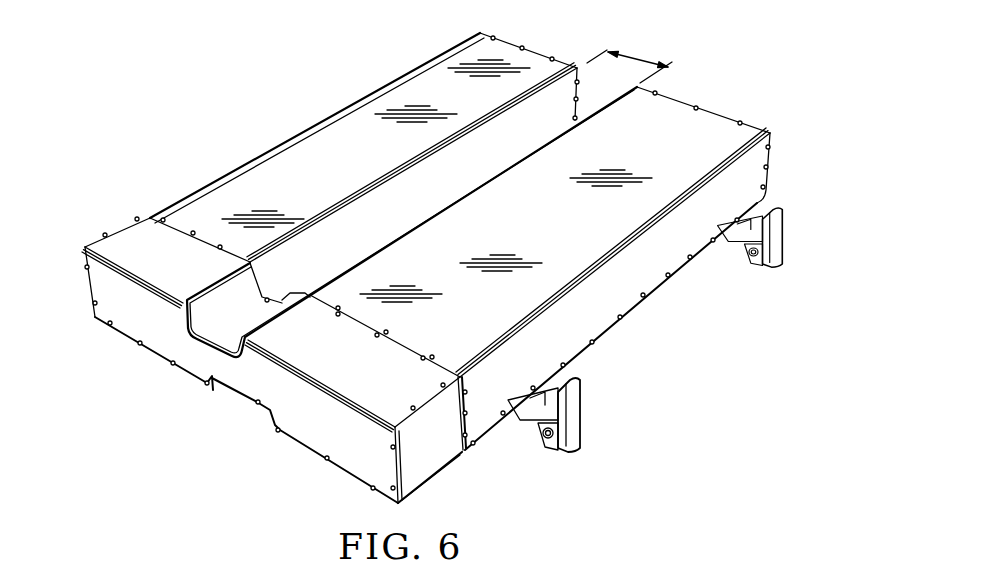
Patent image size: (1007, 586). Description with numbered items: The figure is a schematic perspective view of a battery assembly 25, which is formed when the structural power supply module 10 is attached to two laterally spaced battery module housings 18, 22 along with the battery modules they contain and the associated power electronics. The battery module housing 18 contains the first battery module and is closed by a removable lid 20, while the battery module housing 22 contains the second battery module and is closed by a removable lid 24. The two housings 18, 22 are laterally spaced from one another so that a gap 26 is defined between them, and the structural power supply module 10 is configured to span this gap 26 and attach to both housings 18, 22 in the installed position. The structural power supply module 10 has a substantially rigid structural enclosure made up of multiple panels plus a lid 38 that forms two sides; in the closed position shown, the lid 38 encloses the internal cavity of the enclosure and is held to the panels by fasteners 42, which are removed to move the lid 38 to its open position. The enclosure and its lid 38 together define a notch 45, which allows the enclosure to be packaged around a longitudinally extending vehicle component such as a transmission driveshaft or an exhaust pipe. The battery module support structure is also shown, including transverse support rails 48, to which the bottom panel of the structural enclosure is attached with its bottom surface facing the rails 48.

The structural power supply module 10 is at (190, 420).
The battery module housing 18 is at (713, 137).
The removable lid 20 is at (662, 122).
The battery module housing 22 is at (440, 73).
The removable lid 24 is at (352, 153).
The battery assembly 25 is at (226, 71).
The gap 26 is at (637, 52).
The lid 38 is at (333, 425).
The fasteners 42 is at (163, 220).
The notch 45 is at (245, 320).
The transverse support rails 48 is at (728, 247).